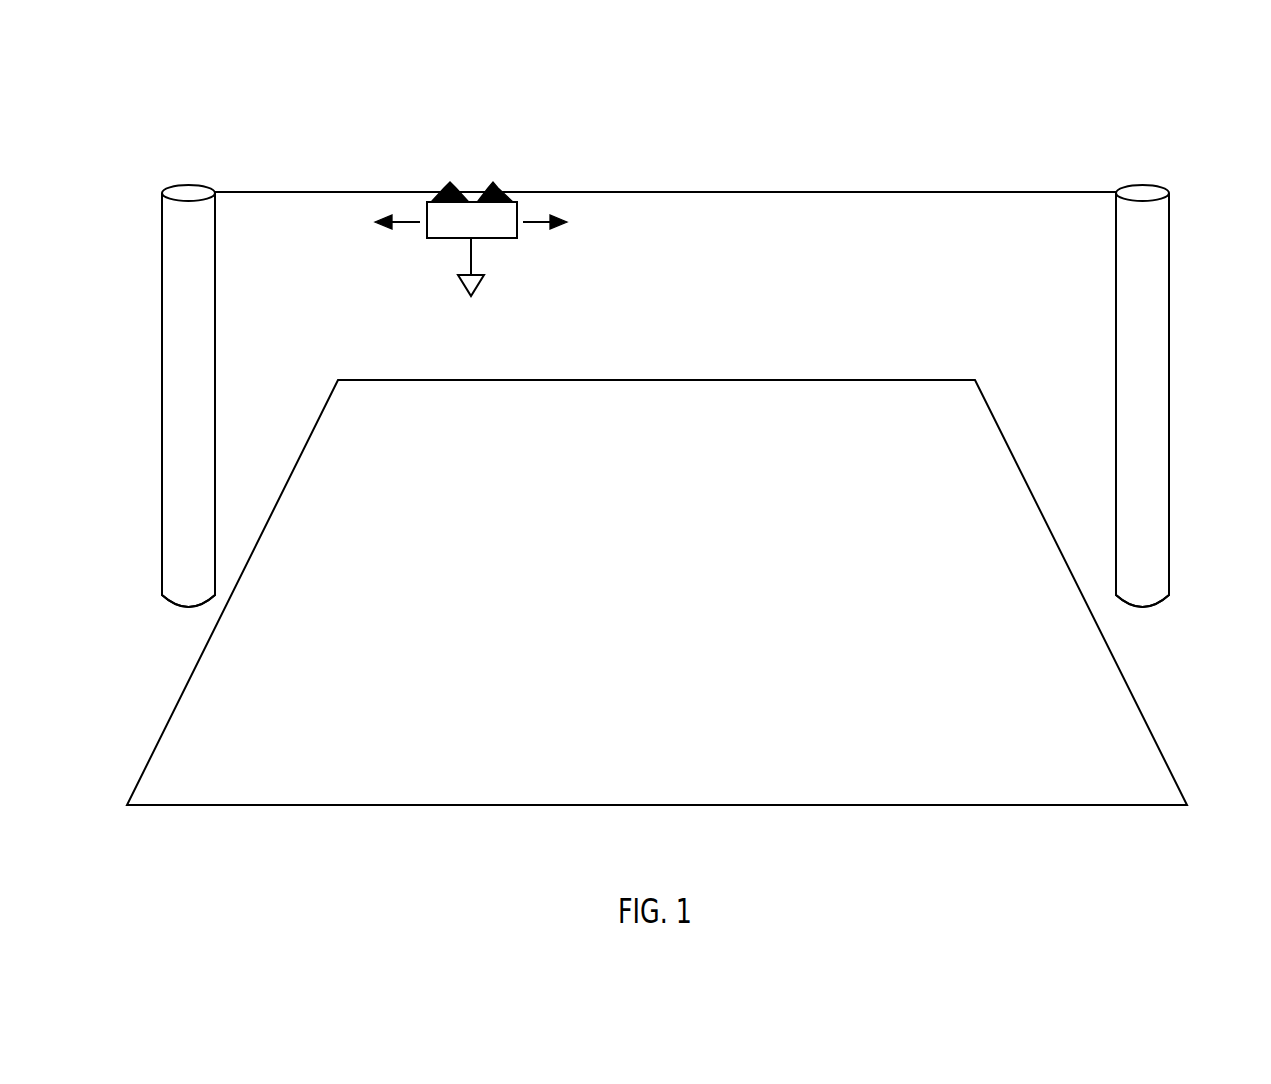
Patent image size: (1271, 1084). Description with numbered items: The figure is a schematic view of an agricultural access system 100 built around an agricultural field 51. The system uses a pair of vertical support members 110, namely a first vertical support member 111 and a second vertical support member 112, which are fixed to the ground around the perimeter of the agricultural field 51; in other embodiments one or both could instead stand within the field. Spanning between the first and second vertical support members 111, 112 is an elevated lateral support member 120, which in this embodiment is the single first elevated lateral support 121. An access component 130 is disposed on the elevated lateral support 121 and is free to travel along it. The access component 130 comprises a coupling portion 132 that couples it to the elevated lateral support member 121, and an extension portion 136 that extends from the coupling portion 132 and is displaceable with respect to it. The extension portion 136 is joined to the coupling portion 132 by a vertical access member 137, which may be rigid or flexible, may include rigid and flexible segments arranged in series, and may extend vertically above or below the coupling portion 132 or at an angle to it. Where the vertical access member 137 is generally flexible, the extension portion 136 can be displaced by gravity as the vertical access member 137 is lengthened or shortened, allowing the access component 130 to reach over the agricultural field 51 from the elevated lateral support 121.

The agricultural access system 100 is at (227, 143).
The vertical support members 110 is at (176, 262).
The first vertical support member 111 is at (1160, 385).
The second vertical support member 112 is at (170, 368).
The elevated lateral support members 120 is at (994, 192).
The first elevated lateral support 121 is at (838, 192).
The access component 130 is at (492, 233).
The coupling portion 132 is at (450, 185).
The extension portion 136 is at (468, 290).
The vertical access member 137 is at (472, 257).
The agricultural field 51 is at (1137, 747).